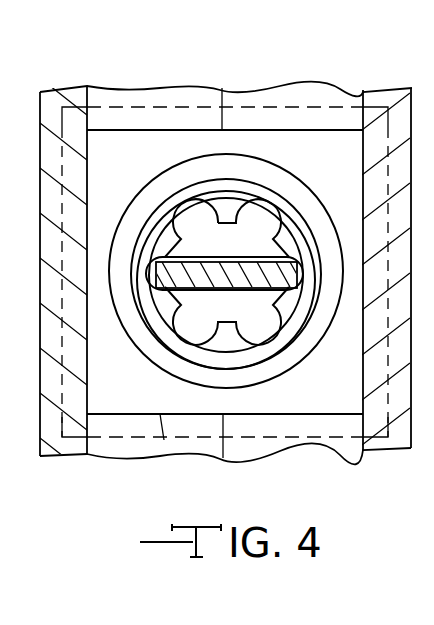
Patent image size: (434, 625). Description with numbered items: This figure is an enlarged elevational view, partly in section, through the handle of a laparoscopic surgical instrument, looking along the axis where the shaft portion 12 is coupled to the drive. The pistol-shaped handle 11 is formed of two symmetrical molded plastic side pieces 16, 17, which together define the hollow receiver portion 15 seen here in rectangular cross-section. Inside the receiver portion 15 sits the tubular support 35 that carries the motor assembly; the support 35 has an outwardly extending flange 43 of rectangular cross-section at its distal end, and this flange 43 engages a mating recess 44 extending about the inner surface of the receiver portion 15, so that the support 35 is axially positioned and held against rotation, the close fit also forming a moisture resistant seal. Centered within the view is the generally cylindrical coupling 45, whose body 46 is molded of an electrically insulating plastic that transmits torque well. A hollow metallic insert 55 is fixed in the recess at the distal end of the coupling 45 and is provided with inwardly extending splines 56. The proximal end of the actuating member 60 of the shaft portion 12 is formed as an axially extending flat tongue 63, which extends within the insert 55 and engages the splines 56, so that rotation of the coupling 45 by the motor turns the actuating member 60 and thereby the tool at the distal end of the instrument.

The pistol-shaped handle 11 is at (279, 113).
The shaft portion 12 is at (198, 278).
The hollow receiver portion 15 is at (183, 98).
The side piece 16 is at (283, 446).
The side piece 17 is at (193, 448).
The tubular support 35 is at (166, 397).
The outwardly extending flange 43 is at (120, 395).
The mating recess 44 is at (108, 110).
The coupling 45 is at (200, 172).
The body 46 is at (145, 200).
The metallic insert 55 is at (143, 310).
The splines 56 is at (233, 343).
The actuating member 60 is at (298, 286).
The flat tongue 63 is at (232, 260).